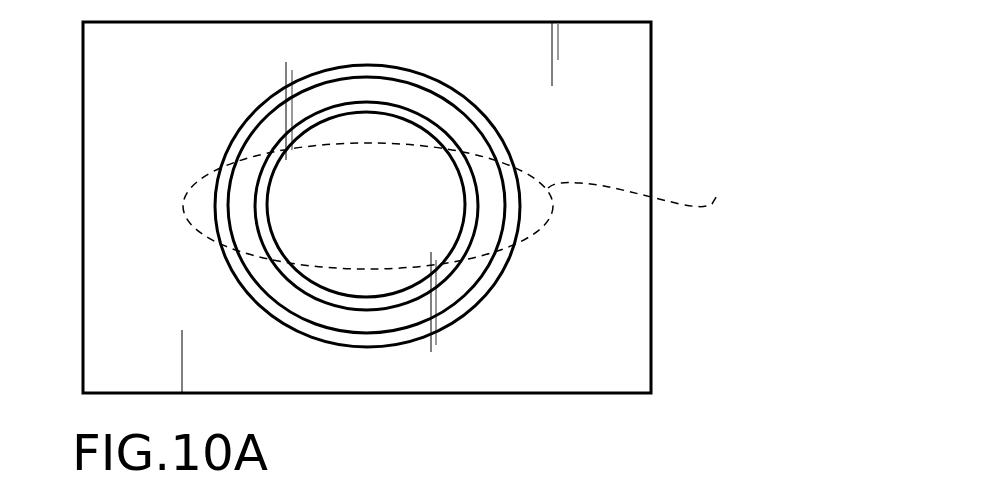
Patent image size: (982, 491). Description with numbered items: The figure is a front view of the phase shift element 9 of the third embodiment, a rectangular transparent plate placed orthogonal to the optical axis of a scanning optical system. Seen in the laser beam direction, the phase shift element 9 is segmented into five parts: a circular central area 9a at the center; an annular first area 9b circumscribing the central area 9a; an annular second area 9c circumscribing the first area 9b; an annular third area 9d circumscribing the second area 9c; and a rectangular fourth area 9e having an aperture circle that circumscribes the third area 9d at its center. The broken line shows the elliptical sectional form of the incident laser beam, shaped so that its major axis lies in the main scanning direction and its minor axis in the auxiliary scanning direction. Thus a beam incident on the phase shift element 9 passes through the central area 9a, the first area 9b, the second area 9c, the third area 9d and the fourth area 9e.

The phase shift element 9 is at (435, 207).
The central area 9a is at (412, 136).
The first area 9b is at (377, 106).
The second area 9c is at (268, 281).
The third area 9d is at (307, 328).
The fourth area 9e is at (615, 280).